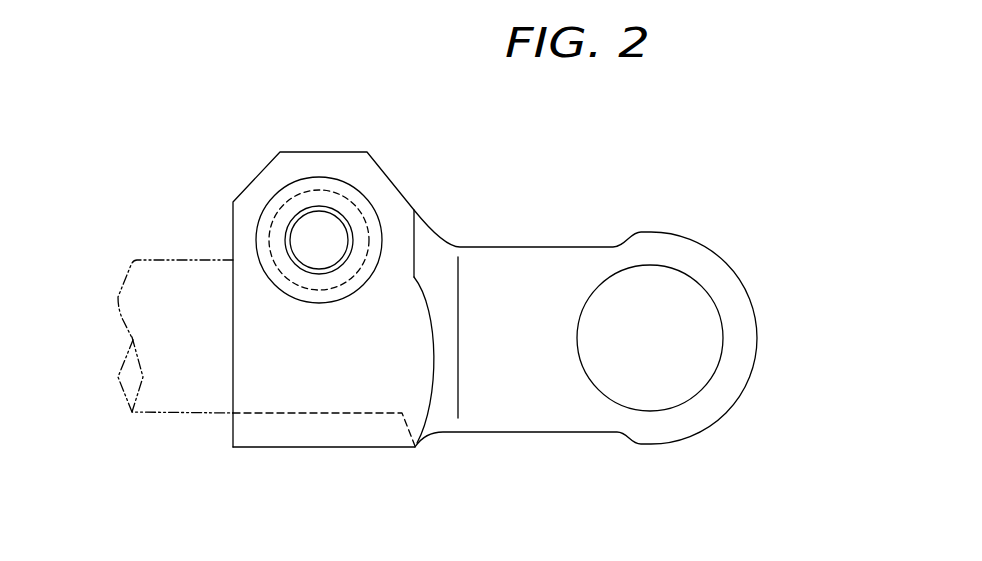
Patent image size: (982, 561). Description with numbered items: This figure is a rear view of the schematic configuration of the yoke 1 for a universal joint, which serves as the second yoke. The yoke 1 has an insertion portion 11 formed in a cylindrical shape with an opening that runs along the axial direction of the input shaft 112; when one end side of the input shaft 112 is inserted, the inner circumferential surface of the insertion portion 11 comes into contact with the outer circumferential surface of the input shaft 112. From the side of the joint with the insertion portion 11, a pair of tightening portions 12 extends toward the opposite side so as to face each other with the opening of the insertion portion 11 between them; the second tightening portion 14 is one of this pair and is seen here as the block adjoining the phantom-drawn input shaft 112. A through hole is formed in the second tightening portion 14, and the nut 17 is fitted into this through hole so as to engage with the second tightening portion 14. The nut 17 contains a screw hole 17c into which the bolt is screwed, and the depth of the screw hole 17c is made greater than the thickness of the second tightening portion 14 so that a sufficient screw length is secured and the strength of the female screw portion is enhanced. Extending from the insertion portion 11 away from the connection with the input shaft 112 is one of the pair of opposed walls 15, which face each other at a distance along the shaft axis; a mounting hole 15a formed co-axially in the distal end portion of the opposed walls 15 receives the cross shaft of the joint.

The yoke for universal joint 1 is at (209, 84).
The insertion portion 11 is at (268, 375).
The tightening portions 12 is at (276, 286).
The second tightening portion 14 is at (265, 183).
The opposed walls 15 is at (538, 303).
The mounting holes 15a is at (723, 347).
The nut 17 is at (348, 210).
The screw hole 17c is at (340, 228).
The input shaft 112 is at (175, 267).